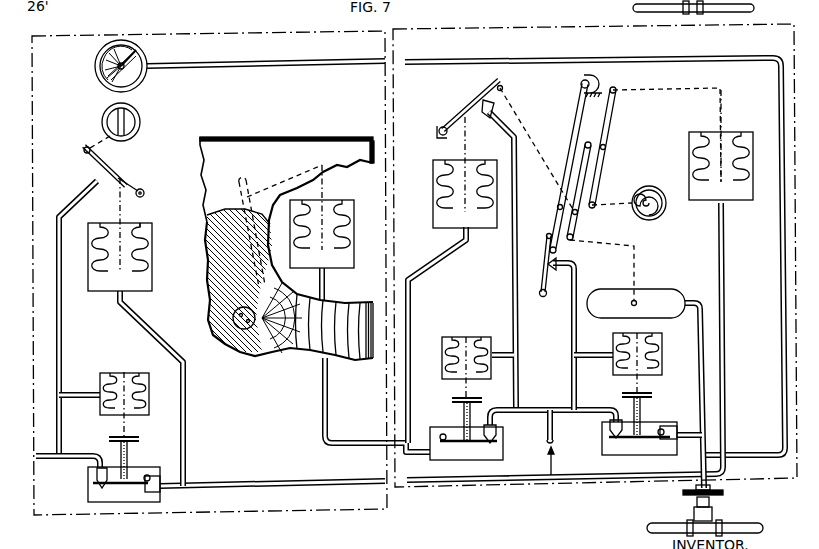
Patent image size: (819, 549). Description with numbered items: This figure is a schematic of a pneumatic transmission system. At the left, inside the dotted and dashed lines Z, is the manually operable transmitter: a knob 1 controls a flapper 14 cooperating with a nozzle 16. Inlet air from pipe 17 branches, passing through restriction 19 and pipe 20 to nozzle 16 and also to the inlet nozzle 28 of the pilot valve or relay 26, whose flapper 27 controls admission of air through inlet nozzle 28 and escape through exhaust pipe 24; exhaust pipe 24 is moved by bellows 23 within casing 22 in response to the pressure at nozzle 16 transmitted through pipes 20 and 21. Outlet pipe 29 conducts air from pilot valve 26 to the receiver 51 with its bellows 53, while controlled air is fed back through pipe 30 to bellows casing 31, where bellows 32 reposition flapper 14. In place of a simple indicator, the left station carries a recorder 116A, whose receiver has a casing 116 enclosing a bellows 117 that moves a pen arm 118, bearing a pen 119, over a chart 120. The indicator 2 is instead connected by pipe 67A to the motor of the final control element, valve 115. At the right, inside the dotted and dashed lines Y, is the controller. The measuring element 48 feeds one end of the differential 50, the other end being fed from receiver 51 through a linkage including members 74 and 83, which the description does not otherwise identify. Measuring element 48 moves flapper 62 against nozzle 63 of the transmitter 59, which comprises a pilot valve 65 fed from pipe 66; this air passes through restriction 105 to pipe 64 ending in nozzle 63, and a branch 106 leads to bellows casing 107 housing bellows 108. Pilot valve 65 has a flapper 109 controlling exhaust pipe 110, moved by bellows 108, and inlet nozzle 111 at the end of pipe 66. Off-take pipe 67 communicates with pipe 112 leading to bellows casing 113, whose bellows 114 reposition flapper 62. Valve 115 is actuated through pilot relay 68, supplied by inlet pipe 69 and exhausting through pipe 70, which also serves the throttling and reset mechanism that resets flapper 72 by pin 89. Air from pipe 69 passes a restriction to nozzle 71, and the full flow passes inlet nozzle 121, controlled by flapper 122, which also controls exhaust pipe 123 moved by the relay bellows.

The knob 1 is at (102, 118).
The indicator 2 is at (95, 66).
The flapper 14 is at (118, 176).
The nozzle 16 is at (98, 172).
The inlet pipe 17 is at (50, 462).
The restriction 19 is at (62, 421).
The pipe 20 is at (62, 326).
The pipe 21 is at (80, 392).
The casing 22 is at (127, 372).
The bellows 23 is at (147, 392).
The exhaust pipe 24 is at (132, 460).
The pilot valve or relay 26 is at (120, 502).
The flapper 27 is at (152, 494).
The inlet nozzle 28 is at (96, 478).
The outlet pipe 29 is at (276, 486).
The pipe 30 is at (158, 348).
The bellows casing 31 is at (153, 262).
The bellows 32 is at (146, 236).
The measuring element 48 is at (645, 192).
The differential 50 is at (565, 111).
The receiver 51 is at (737, 132).
The bellows 53 is at (700, 146).
The transmitter 59 is at (433, 160).
The flapper 62 is at (478, 95).
The nozzle 63 is at (486, 114).
The pipe 64 is at (511, 248).
The pilot valve 65 is at (505, 453).
The pipe 66 is at (538, 442).
The off-take pipe 67 is at (323, 387).
The pipe 67A is at (270, 64).
The pilot relay 68 is at (603, 447).
The inlet pipe 69 is at (566, 412).
The pipe 70 is at (702, 370).
The nozzle 71 is at (562, 272).
The flapper 72 is at (546, 264).
The link 74 is at (568, 196).
The link 83 is at (614, 120).
The pin 89 is at (637, 301).
The restriction 105 is at (516, 393).
The branch 106 is at (505, 352).
The bellows casing 107 is at (470, 336).
The bellows 108 is at (447, 356).
The flapper 109 is at (460, 447).
The exhaust pipe 110 is at (458, 404).
The inlet nozzle 111 is at (499, 433).
The pipe 112 is at (411, 304).
The bellows casing 113 is at (440, 197).
The bellows 114 is at (440, 174).
The valve 115 is at (698, 509).
The casing 116 is at (340, 270).
The recorder 116A is at (236, 125).
The bellows 117 is at (339, 205).
The pen arm 118 is at (250, 182).
The pen 119 is at (260, 345).
The chart 120 is at (218, 297).
The inlet nozzle 121 is at (611, 428).
The flapper 122 is at (632, 440).
The exhaust pipe 123 is at (645, 410).
The dotted and dashed lines Y is at (505, 488).
The dotted and dashed lines Z is at (319, 513).